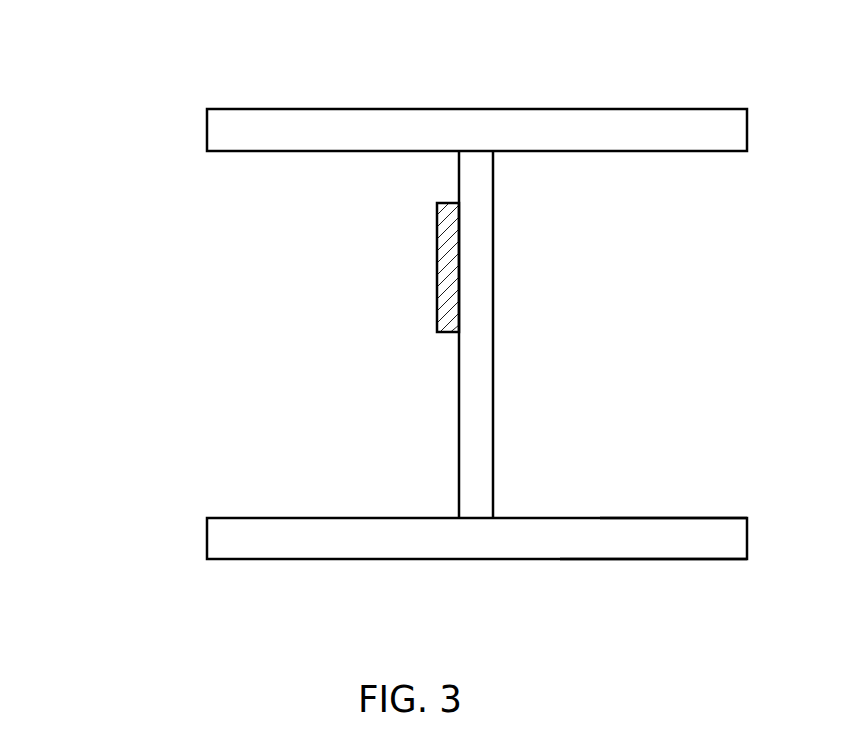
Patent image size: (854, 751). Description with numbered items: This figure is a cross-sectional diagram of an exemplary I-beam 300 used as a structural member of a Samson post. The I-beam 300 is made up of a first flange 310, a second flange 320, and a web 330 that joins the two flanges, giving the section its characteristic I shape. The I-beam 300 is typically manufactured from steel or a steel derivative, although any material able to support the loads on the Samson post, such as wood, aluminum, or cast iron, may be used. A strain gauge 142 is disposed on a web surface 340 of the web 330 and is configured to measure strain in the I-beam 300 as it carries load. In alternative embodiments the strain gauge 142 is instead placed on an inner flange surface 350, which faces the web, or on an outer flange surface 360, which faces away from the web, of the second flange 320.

The I-beam 300 is at (162, 80).
The first flange 310 is at (344, 122).
The second flange 320 is at (387, 547).
The web 330 is at (487, 288).
The web surface 340 is at (459, 430).
The inner flange surface 350 is at (687, 518).
The outer flange surface 360 is at (627, 560).
The strain gauge 142 is at (437, 263).